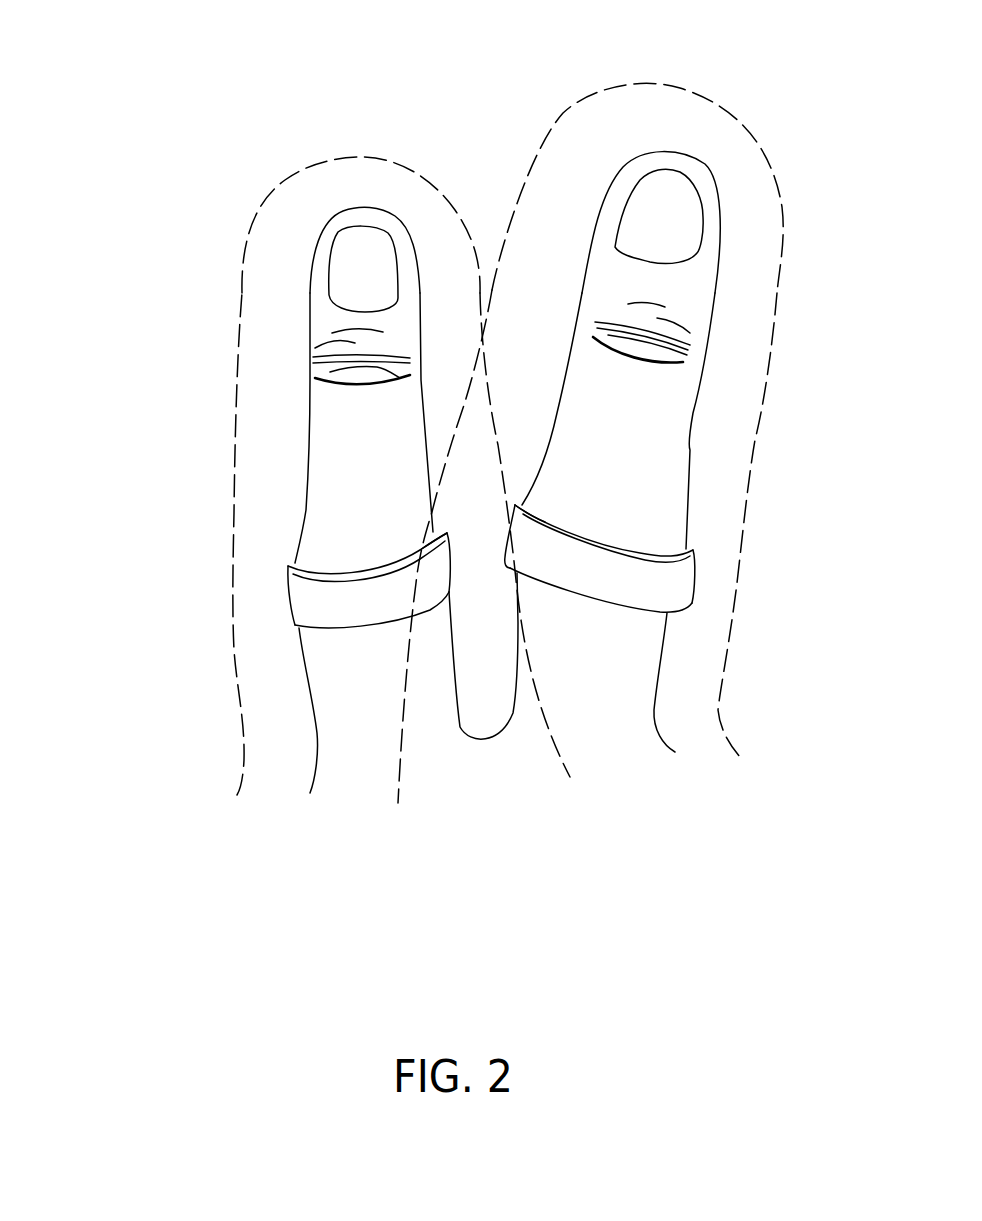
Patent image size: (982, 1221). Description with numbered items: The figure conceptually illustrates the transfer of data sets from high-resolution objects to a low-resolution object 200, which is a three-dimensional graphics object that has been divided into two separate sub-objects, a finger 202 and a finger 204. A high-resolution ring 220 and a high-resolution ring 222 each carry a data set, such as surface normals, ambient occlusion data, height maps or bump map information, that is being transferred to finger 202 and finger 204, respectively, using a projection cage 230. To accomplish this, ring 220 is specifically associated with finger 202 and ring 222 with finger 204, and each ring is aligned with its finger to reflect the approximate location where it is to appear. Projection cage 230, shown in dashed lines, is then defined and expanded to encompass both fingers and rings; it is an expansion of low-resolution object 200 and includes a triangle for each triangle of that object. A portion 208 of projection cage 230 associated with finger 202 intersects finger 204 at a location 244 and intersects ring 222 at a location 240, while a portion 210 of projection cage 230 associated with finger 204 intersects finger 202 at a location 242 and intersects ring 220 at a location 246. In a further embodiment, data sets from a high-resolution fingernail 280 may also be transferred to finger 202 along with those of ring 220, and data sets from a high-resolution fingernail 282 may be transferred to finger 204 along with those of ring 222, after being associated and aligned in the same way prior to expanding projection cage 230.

The low-resolution object 200 is at (466, 102).
The finger 202 is at (308, 428).
The finger 204 is at (692, 443).
The portion of projection cage 208 is at (385, 163).
The portion of projection cage 210 is at (580, 97).
The high-resolution ring 220 is at (288, 598).
The high-resolution ring 222 is at (692, 583).
The projection cage 230 is at (245, 234).
The location 240 is at (530, 510).
The location 242 is at (433, 535).
The location 244 is at (520, 623).
The location 246 is at (407, 621).
The high-resolution fingernail 280 is at (360, 228).
The high-resolution fingernail 282 is at (672, 170).